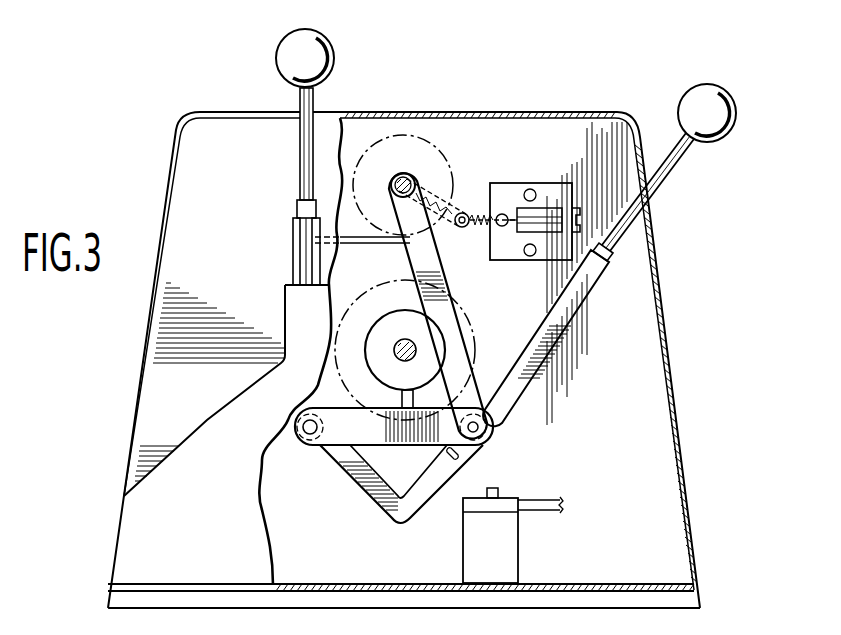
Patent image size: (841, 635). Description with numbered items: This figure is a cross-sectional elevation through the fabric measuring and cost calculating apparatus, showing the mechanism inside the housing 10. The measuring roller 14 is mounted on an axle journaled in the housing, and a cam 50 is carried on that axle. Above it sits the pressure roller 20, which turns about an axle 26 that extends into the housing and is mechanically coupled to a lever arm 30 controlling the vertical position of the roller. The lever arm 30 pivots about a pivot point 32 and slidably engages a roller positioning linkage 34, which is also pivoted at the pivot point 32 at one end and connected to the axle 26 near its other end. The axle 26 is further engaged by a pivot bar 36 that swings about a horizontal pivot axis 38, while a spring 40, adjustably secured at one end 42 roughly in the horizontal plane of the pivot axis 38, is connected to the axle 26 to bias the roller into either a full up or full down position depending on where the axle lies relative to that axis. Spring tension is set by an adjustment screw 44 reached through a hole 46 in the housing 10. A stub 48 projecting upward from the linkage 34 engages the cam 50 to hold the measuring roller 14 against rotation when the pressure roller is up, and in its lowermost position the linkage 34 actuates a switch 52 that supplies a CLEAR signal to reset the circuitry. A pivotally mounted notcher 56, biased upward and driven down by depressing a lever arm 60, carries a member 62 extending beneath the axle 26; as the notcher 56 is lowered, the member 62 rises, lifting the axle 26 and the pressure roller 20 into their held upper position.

The housing 10 is at (662, 335).
The measuring roller 14 is at (474, 322).
The pressure roller 20 is at (445, 165).
The axle 26 is at (416, 172).
The lever arm 30 is at (682, 167).
The pivot point 32 is at (306, 441).
The roller positioning linkage 34 is at (463, 350).
The pivot bar 36 is at (442, 217).
The pivot axis 38 is at (460, 228).
The spring 40 is at (447, 190).
The spring end 42 is at (505, 214).
The adjustment screw 44 is at (578, 208).
The hole 46 is at (646, 244).
The stub 48 is at (397, 398).
The cam 50 is at (365, 348).
The switch 52 is at (504, 497).
The notcher 56 is at (300, 280).
The lever arm 60 is at (318, 62).
The member 62 is at (366, 246).